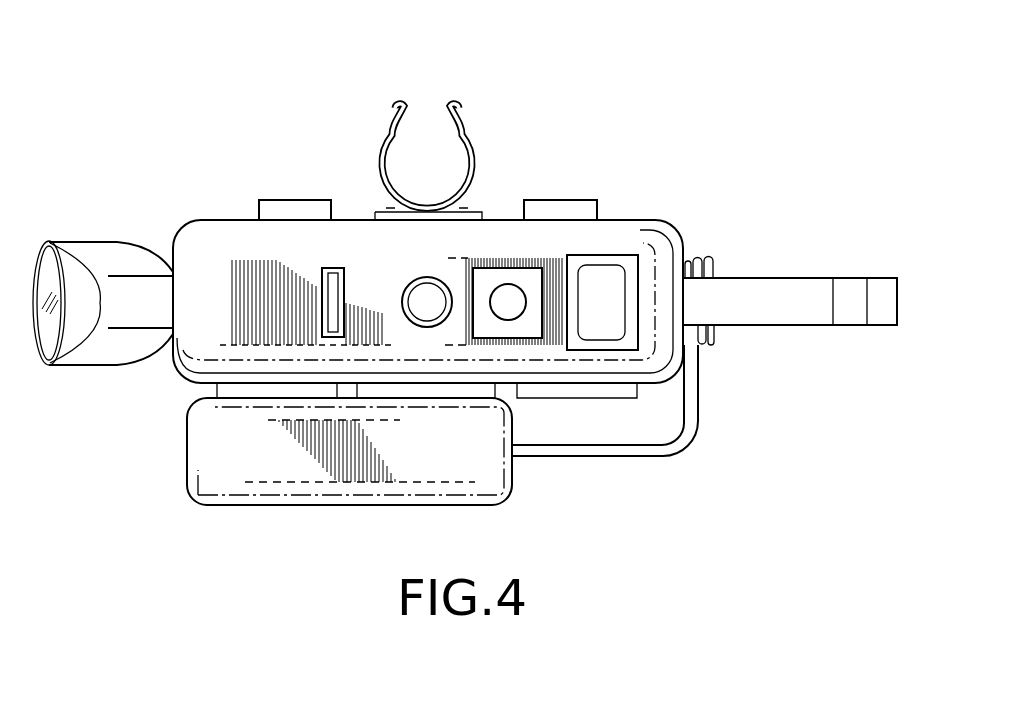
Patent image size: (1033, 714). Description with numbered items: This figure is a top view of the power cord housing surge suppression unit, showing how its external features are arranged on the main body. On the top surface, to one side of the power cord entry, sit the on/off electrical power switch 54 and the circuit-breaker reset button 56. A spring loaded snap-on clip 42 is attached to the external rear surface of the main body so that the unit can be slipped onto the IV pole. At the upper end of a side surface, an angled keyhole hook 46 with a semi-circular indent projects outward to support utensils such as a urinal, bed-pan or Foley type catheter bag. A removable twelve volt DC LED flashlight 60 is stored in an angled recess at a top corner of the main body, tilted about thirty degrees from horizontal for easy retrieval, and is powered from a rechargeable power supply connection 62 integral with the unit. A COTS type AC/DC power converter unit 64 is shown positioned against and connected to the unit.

The snap-on clip 42 is at (465, 137).
The keyhole hook 46 is at (802, 277).
The on/off switch 54 is at (322, 276).
The circuit-breaker reset button 56 is at (520, 275).
The LED flashlight 60 is at (93, 242).
The rechargeable power supply connection 62 is at (273, 200).
The AC/DC power converter unit 64 is at (278, 505).